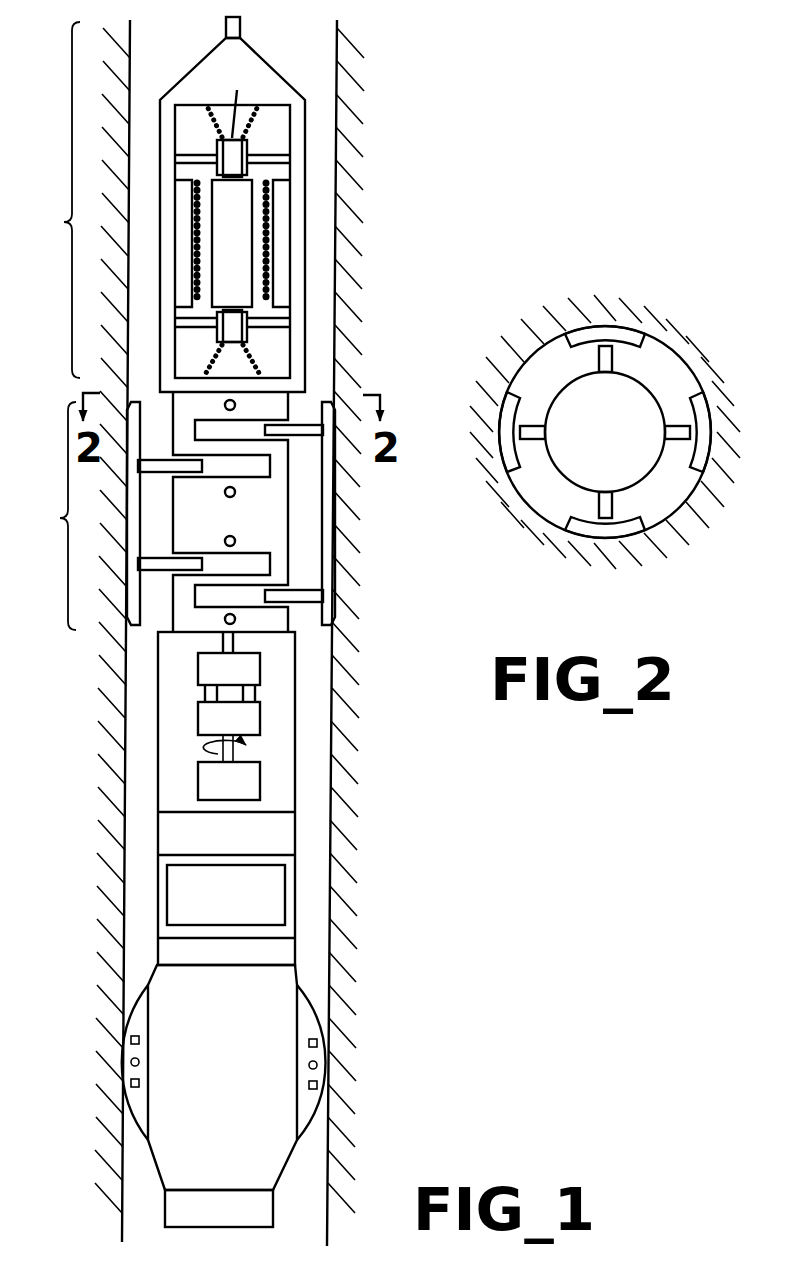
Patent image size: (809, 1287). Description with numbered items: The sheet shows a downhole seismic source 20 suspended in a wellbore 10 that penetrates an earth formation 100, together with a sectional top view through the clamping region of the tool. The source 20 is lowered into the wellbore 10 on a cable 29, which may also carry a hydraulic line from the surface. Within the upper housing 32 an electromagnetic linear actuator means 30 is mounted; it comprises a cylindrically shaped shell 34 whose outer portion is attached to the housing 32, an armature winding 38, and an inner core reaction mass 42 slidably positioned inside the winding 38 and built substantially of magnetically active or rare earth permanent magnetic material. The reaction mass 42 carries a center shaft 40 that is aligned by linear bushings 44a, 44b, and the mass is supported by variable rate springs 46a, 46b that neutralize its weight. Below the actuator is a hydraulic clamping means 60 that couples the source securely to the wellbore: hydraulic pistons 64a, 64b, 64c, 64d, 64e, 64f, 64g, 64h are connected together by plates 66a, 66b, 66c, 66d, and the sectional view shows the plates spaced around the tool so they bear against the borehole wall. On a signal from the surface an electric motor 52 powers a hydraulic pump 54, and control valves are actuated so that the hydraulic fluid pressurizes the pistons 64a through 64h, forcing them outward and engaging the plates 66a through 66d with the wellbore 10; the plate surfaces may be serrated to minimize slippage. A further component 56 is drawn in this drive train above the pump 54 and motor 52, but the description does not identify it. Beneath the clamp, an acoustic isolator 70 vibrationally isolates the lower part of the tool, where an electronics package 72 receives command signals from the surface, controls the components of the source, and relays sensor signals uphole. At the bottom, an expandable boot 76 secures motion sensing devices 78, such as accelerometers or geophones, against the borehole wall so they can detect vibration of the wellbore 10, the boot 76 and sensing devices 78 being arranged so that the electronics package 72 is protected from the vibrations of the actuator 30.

In FIG. 1, the wellbore 10 is at (122, 320).
In FIG. 2, the wellbore 10 is at (533, 513).
In FIG. 1, the downhole seismic source 20 is at (444, 123).
In FIG. 1, the cable 29 is at (241, 25).
In FIG. 1, the electromagnetic linear actuator means 30 is at (219, 202).
In FIG. 1, the housing 32 is at (307, 122).
In FIG. 1, the cylindrically shaped shell 34 is at (183, 223).
In FIG. 1, the armature winding 38 is at (277, 206).
In FIG. 1, the center shaft 40 is at (238, 100).
In FIG. 1, the inner core reaction mass 42 is at (247, 260).
In FIG. 1, the linear bushing 44a is at (215, 147).
In FIG. 1, the linear bushing 44b is at (248, 335).
In FIG. 1, the variable rate spring 46a is at (205, 122).
In FIG. 1, the variable rate spring 46b is at (256, 372).
In FIG. 1, the electric motor 52 is at (252, 778).
In FIG. 1, the hydraulic pump 54 is at (252, 720).
In FIG. 1, the drive unit 56 is at (252, 667).
In FIG. 1, the hydraulic clamping means 60 is at (230, 521).
In FIG. 1, the hydraulic piston 64a is at (160, 470).
In FIG. 2, the hydraulic piston 64a is at (515, 357).
In FIG. 1, the hydraulic piston 64b is at (157, 571).
In FIG. 2, the hydraulic piston 64b is at (533, 425).
In FIG. 1, the hydraulic piston 64c is at (305, 438).
In FIG. 2, the hydraulic piston 64c is at (727, 378).
In FIG. 1, the hydraulic piston 64d is at (307, 585).
In FIG. 2, the hydraulic piston 64d is at (697, 431).
In FIG. 1, the hydraulic piston 64e is at (207, 405).
In FIG. 2, the hydraulic piston 64e is at (550, 557).
In FIG. 1, the hydraulic piston 64f is at (228, 535).
In FIG. 2, the hydraulic piston 64f is at (602, 510).
In FIG. 1, the hydraulic piston 64g is at (236, 493).
In FIG. 2, the hydraulic piston 64g is at (683, 328).
In FIG. 1, the hydraulic piston 64h is at (238, 619).
In FIG. 2, the hydraulic piston 64h is at (613, 357).
In FIG. 1, the plate 66a is at (132, 395).
In FIG. 2, the plate 66a is at (505, 427).
In FIG. 1, the plate 66b is at (333, 397).
In FIG. 2, the plate 66b is at (707, 443).
In FIG. 2, the plate 66c is at (617, 537).
In FIG. 2, the plate 66d is at (617, 322).
In FIG. 1, the acoustic isolator 70 is at (263, 837).
In FIG. 1, the electronics package 72 is at (257, 905).
In FIG. 1, the expandable boot 76 is at (240, 1058).
In FIG. 1, the sensing devices 78 is at (323, 1075).
In FIG. 1, the earth formation 100 is at (427, 277).
In FIG. 2, the earth formation 100 is at (742, 582).